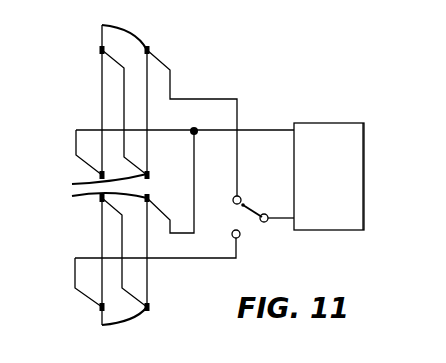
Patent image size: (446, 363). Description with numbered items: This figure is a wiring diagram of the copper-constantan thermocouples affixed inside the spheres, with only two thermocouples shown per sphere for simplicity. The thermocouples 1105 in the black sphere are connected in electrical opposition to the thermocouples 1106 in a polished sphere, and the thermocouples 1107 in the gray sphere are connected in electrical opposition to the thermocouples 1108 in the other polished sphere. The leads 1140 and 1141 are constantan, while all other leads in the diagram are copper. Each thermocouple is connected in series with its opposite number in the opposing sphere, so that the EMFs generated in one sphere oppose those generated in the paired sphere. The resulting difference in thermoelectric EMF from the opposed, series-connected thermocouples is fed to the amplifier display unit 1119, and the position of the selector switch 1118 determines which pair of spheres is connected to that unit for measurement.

The thermocouples 1105 is at (101, 35).
The thermocouples 1106 is at (84, 180).
The thermocouples 1107 is at (84, 202).
The thermocouples 1108 is at (103, 327).
The lead 1140 is at (102, 80).
The lead 1141 is at (102, 235).
The selector switch 1118 is at (245, 204).
The amplifier display unit 1119 is at (329, 176).